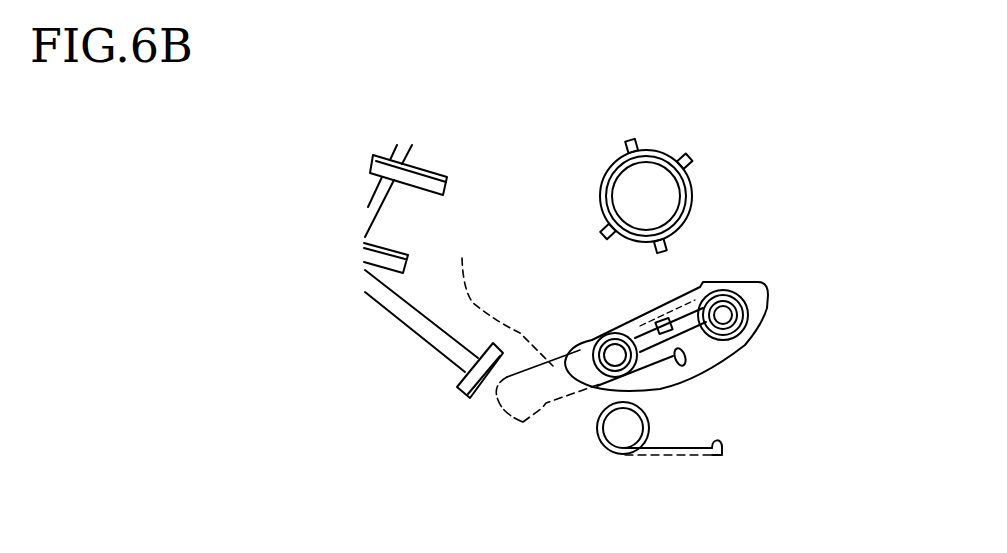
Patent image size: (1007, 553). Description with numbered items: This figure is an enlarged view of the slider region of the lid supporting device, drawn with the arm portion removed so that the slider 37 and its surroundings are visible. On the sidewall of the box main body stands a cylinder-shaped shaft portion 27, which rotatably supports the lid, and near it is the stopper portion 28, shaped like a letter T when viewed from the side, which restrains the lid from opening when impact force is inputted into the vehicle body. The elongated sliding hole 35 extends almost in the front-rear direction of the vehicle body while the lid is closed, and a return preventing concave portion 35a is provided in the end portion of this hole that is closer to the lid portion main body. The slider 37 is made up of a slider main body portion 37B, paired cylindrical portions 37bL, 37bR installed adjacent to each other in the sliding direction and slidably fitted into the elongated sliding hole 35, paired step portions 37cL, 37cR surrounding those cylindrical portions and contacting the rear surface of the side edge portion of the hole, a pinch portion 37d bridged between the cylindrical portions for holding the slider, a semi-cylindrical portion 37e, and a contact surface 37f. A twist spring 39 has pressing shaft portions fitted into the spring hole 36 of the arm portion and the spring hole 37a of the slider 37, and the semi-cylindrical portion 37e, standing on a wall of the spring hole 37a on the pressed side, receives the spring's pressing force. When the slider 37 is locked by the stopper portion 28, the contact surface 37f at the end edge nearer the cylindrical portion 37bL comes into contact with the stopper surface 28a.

The cylinder-shaped shaft portion 27 is at (697, 188).
The stopper portion 28 is at (420, 327).
The stopper surface 28a is at (478, 394).
The elongated sliding hole 35 is at (512, 302).
The return preventing concave portion 35a is at (530, 424).
The spring hole 36 is at (723, 440).
The slider 37 is at (756, 268).
The slider main body portion 37B is at (765, 290).
The spring hole 37a is at (678, 378).
The cylindrical portion 37bL is at (615, 343).
The cylindrical portion 37bR is at (727, 333).
The step portion 37cL is at (592, 352).
The step portion 37cR is at (745, 304).
The pinch portion 37d is at (662, 320).
The semi-cylindrical portion 37e is at (681, 346).
The contact surface 37f is at (590, 343).
The twist spring 39 is at (652, 455).